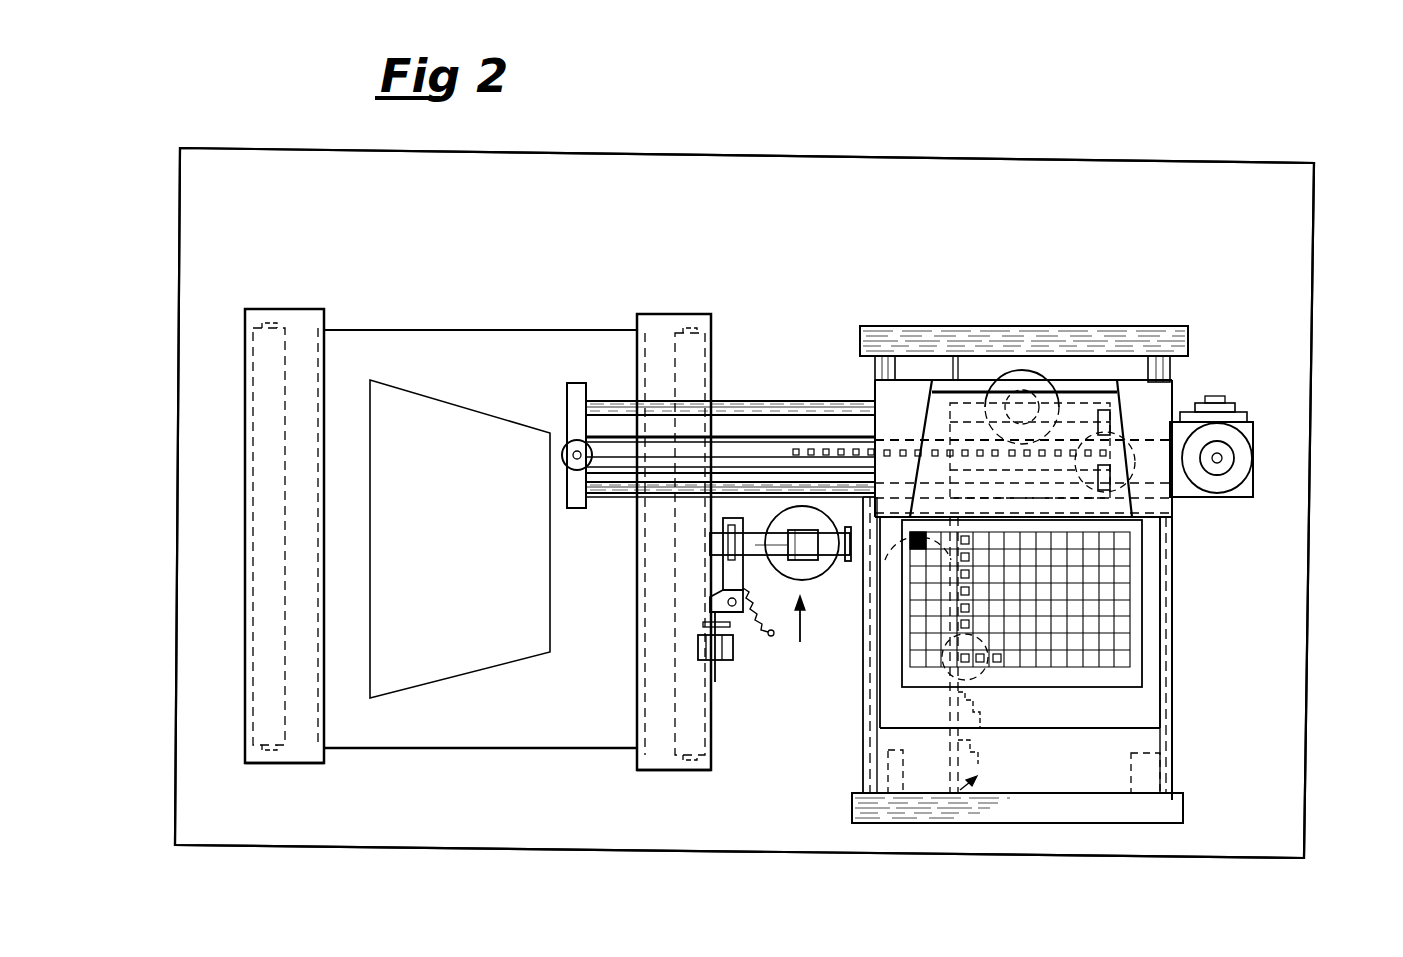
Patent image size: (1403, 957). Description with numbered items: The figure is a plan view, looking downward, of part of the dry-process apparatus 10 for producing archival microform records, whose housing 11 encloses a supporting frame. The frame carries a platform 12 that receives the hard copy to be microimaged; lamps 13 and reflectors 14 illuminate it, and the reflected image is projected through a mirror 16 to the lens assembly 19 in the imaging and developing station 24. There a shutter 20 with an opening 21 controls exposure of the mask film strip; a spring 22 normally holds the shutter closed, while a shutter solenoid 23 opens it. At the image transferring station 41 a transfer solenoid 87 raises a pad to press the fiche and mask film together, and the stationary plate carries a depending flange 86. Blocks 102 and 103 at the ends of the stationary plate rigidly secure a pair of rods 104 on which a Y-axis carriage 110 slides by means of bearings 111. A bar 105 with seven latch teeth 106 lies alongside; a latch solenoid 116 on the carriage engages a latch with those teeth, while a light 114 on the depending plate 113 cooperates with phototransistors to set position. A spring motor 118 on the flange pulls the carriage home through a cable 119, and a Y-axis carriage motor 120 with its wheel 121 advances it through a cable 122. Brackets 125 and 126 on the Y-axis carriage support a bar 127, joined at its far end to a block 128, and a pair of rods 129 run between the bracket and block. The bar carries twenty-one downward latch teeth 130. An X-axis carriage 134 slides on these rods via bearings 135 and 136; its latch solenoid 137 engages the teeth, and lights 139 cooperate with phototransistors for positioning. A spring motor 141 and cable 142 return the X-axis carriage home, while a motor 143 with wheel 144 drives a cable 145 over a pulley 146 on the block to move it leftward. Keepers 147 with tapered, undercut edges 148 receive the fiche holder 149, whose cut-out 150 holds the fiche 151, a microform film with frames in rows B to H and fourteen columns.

The dry-process apparatus 10 is at (948, 152).
The housing 11 is at (179, 319).
The platform 12 is at (465, 750).
The lamps 13 is at (251, 547).
The reflectors 14 is at (290, 766).
The mirror 16 is at (497, 658).
The lens assembly 19 is at (804, 584).
The shutter 20 is at (750, 554).
The opening 21 is at (826, 536).
The spring 22 is at (761, 602).
The shutter solenoid 23 is at (734, 649).
The imaging and developing station 24 is at (802, 632).
The image transferring station 41 is at (923, 306).
The depending flange 86 is at (950, 700).
The transfer solenoid 87 is at (890, 515).
The block 102 is at (1003, 326).
The block 103 is at (1011, 818).
The rods 104 is at (875, 373).
The bar 105 is at (950, 628).
The latch teeth 106 is at (970, 604).
The Y-axis carriage 110 is at (1089, 798).
The bearings 111 is at (863, 773).
The depending plate 113 is at (1000, 601).
The light 114 is at (998, 678).
The latch solenoid 116 is at (990, 644).
The spring motor 118 is at (981, 764).
The cable 119 is at (982, 706).
The Y-axis carriage motor 120 is at (1028, 372).
The wheel 121 is at (1062, 384).
The cable 122 is at (1010, 468).
The bracket 125 is at (1172, 554).
The bracket 126 is at (862, 552).
The bar 127 is at (748, 430).
The block 128 is at (566, 393).
The rods 129 is at (613, 402).
The latch teeth 130 is at (796, 445).
The X-axis carriage 134 is at (1090, 388).
The bearings 135 is at (1118, 381).
The bearings 136 is at (972, 392).
The latch solenoid 137 is at (1176, 496).
The lights 139 is at (1172, 413).
The spring motor 141 is at (1228, 398).
The cable 142 is at (1176, 401).
The motor 143 is at (1242, 478).
The wheel 144 is at (1252, 458).
The cable 145 is at (659, 438).
The pulley 146 is at (562, 458).
The keepers 147 is at (886, 378).
The tapered edges 148 is at (930, 418).
The fiche holder 149 is at (1162, 667).
The cut-out 150 is at (1142, 636).
The fiche 151 is at (1140, 612).